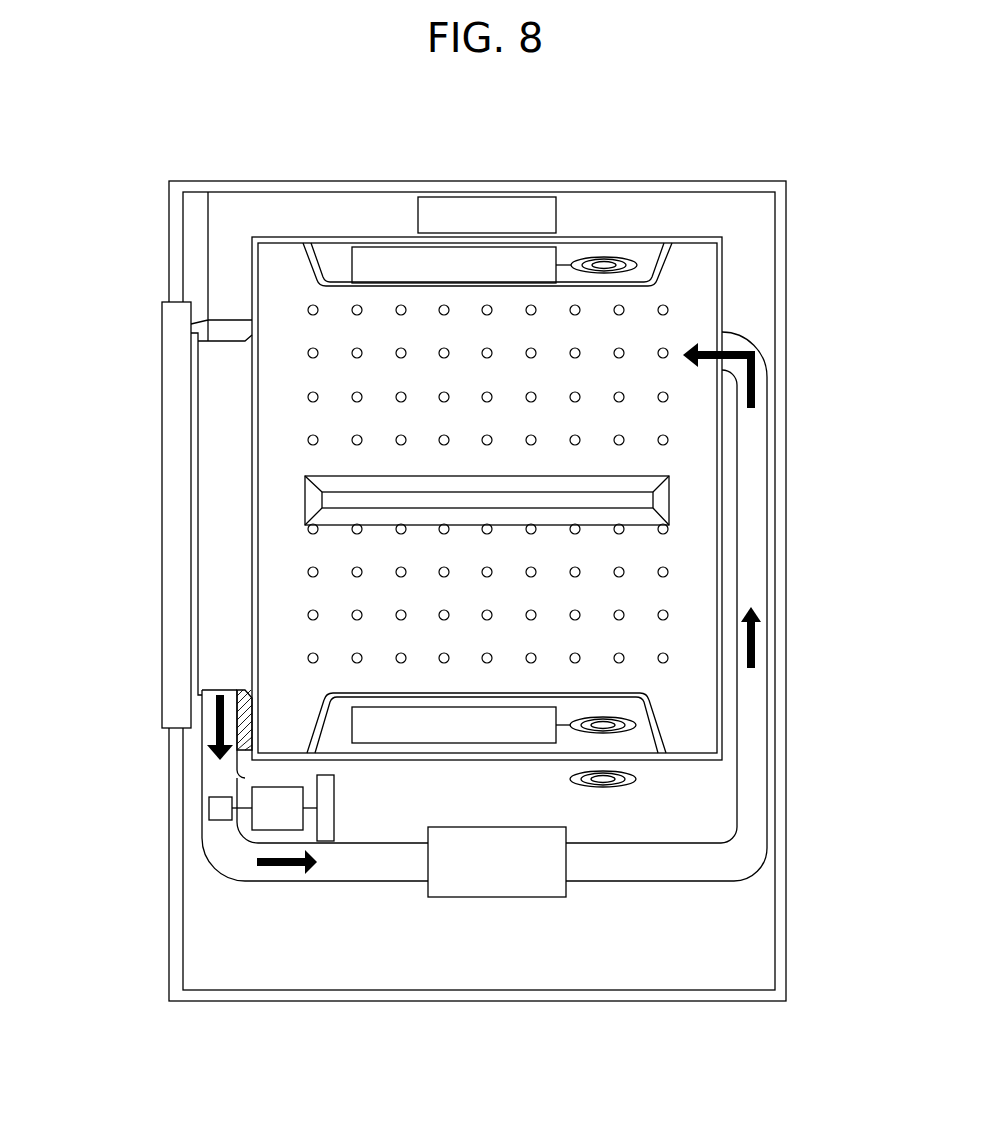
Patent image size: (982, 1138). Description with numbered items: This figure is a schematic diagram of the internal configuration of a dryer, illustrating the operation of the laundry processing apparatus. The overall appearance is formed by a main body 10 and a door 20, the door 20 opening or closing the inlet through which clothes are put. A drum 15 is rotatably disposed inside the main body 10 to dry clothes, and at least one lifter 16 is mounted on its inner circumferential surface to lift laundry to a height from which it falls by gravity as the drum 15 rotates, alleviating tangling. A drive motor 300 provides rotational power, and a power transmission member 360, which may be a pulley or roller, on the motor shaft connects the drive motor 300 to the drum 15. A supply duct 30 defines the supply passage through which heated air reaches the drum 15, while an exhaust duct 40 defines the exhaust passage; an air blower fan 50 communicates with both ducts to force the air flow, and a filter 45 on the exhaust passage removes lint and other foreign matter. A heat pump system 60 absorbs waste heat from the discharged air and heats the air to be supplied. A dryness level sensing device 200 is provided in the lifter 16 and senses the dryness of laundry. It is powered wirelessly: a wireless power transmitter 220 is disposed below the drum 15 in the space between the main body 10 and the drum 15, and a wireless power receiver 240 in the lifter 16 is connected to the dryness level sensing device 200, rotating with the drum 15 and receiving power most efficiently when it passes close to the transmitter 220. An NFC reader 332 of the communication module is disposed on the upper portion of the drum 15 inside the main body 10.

The main body 10 is at (368, 181).
The drum 15 is at (712, 273).
The lifter 16 is at (326, 247).
The door 20 is at (175, 463).
The supply duct 30 is at (757, 550).
The exhaust duct 40 is at (215, 855).
The filter 45 is at (237, 778).
The air blower fan 50 is at (220, 808).
The heat pump system 60 is at (498, 897).
The dryness level sensing device 200 is at (398, 247).
The wireless power transmitter 220 is at (636, 776).
The wireless power receiver 240 is at (590, 258).
The drive motor 300 is at (260, 838).
The NFC reader 332 is at (510, 197).
The power transmission member 360 is at (327, 841).